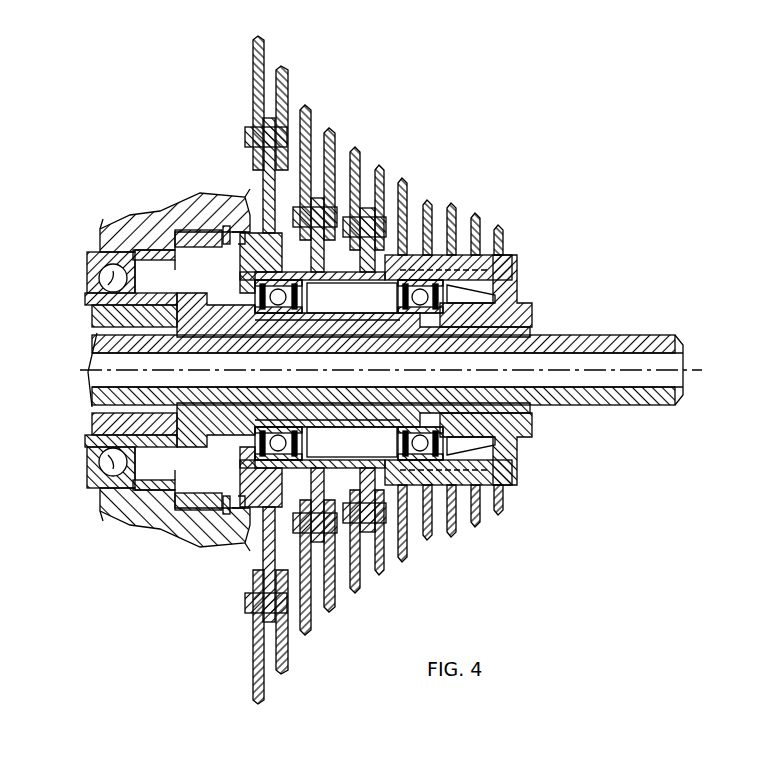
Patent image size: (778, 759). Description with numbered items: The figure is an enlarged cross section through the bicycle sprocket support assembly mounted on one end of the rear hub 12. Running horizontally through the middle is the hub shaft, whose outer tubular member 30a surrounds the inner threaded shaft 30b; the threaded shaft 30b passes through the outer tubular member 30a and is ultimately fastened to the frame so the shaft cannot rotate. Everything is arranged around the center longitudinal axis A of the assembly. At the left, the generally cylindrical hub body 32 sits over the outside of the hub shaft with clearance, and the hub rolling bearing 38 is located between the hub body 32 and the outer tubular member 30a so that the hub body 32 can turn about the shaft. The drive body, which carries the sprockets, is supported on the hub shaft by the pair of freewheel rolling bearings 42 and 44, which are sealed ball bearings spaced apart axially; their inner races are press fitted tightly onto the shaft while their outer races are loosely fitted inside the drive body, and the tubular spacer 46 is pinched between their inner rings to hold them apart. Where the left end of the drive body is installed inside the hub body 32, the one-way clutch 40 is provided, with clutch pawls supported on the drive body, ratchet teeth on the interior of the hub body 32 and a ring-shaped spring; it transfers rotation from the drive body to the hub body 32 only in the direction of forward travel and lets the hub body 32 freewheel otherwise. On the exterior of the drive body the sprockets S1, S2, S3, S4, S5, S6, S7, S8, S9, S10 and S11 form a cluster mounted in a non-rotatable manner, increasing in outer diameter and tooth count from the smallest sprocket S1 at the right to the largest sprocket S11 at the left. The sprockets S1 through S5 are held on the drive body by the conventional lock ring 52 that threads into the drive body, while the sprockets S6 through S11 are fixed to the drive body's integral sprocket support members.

The rear hub 12 is at (114, 542).
The outer tubular member 30a is at (97, 315).
The inner threaded shaft 30b is at (110, 342).
The hub body 32 is at (124, 229).
The hub rolling bearing 38 is at (87, 266).
The one-way clutch 40 is at (188, 232).
The freewheel rolling bearing 42 is at (417, 458).
The freewheel rolling bearing 44 is at (285, 458).
The spacer 46 is at (331, 427).
The lock ring 52 is at (513, 468).
The center longitudinal axis A is at (591, 372).
The sprocket S1 is at (500, 226).
The sprocket S2 is at (477, 214).
The sprocket S3 is at (450, 204).
The sprocket S4 is at (425, 201).
The sprocket S5 is at (400, 179).
The sprocket S6 is at (377, 165).
The sprocket S7 is at (352, 148).
The sprocket S8 is at (327, 129).
The sprocket S9 is at (303, 106).
The sprocket S10 is at (280, 67).
The sprocket S11 is at (258, 36).